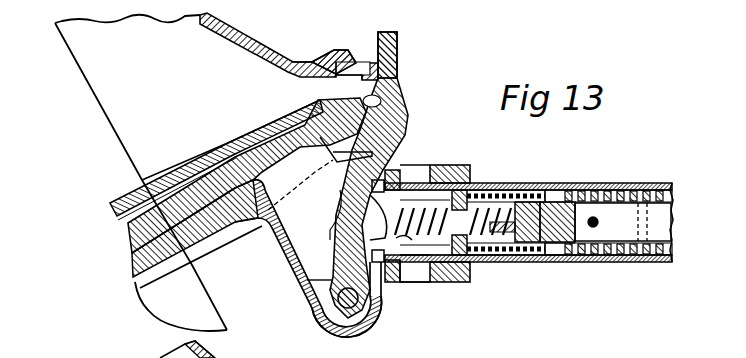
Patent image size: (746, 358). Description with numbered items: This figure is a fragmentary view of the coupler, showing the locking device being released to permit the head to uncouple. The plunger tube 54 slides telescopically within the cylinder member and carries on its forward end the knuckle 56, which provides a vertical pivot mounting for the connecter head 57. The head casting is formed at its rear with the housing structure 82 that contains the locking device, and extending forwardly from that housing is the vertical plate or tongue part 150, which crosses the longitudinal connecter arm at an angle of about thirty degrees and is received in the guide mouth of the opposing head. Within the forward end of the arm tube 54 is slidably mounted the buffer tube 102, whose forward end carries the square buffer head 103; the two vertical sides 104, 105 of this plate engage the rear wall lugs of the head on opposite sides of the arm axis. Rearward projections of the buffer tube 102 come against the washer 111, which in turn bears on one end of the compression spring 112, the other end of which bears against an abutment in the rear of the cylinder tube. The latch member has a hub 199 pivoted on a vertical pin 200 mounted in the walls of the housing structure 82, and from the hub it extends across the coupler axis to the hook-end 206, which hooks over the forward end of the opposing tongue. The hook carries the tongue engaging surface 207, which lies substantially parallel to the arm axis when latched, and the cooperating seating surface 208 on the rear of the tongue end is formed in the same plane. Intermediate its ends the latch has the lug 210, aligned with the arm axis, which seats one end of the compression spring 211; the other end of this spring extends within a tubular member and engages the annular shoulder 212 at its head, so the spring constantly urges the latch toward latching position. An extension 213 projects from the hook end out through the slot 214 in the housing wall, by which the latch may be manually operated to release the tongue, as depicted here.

The plunger tube 54 is at (536, 182).
The knuckle 56 is at (470, 165).
The connecter head 57 is at (282, 56).
The housing structure 82 is at (292, 278).
The buffer tube 102 is at (502, 190).
The buffer head 103 is at (391, 291).
The vertical side of buffer head 104 is at (397, 283).
The vertical side of buffer head 105 is at (397, 168).
The washer 111 is at (573, 186).
The compression spring 112 is at (617, 190).
The tongue part 150 is at (210, 167).
The hub 199 is at (331, 321).
The vertical pin 200 is at (349, 308).
The hook-end 206 is at (407, 117).
The tongue engaging surface 207 is at (398, 107).
The seating surface 208 is at (336, 92).
The lug 210 is at (413, 250).
The compression spring 211 is at (495, 255).
The annular shoulder 212 is at (550, 263).
The extension 213 is at (394, 62).
The slot 214 is at (357, 66).